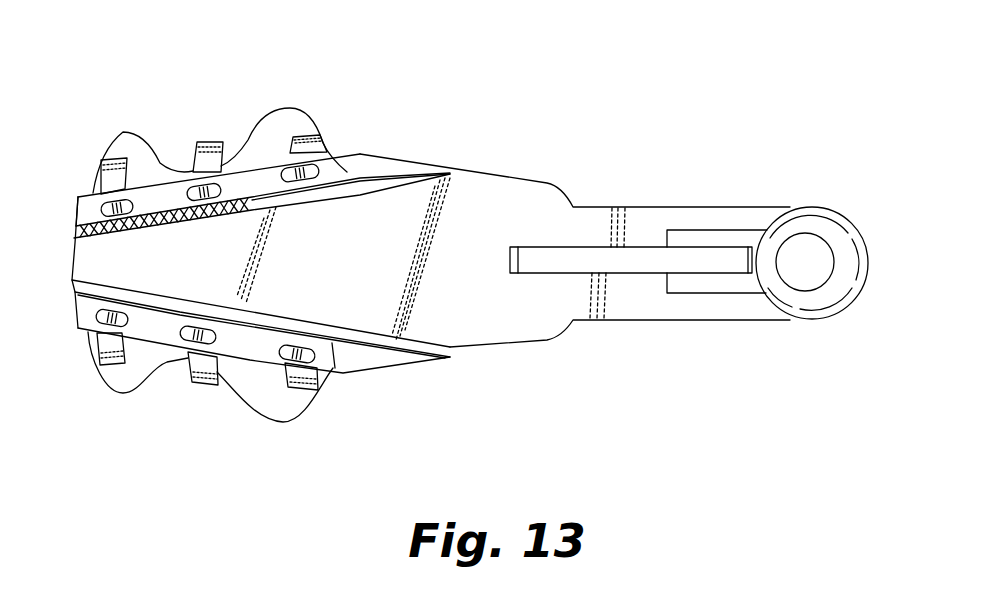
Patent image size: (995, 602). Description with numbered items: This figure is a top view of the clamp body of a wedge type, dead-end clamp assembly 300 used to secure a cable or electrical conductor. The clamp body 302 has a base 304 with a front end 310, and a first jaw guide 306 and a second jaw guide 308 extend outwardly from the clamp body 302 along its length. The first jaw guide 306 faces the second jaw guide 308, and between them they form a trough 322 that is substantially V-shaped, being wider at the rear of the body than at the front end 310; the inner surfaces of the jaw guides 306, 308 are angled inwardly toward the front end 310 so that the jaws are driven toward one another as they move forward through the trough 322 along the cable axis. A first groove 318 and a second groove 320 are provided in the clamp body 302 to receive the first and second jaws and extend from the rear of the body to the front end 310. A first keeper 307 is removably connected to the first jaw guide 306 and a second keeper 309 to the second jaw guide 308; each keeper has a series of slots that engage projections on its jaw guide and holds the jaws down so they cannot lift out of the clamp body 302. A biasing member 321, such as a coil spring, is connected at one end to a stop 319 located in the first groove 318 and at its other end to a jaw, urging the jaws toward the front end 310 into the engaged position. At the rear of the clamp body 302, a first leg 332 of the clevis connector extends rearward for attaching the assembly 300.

The dead-end clamp assembly 300 is at (571, 106).
The clamp body 302 is at (560, 340).
The base 304 is at (507, 193).
The first jaw guide 306 is at (337, 160).
The first keeper 307 is at (167, 190).
The second jaw guide 308 is at (337, 367).
The second keeper 309 is at (150, 332).
The front end 310 is at (70, 273).
The first groove 318 is at (77, 236).
The stop 319 is at (272, 192).
The second groove 320 is at (75, 283).
The biasing member 321 is at (163, 230).
The trough 322 is at (223, 267).
The first leg 332 is at (805, 217).